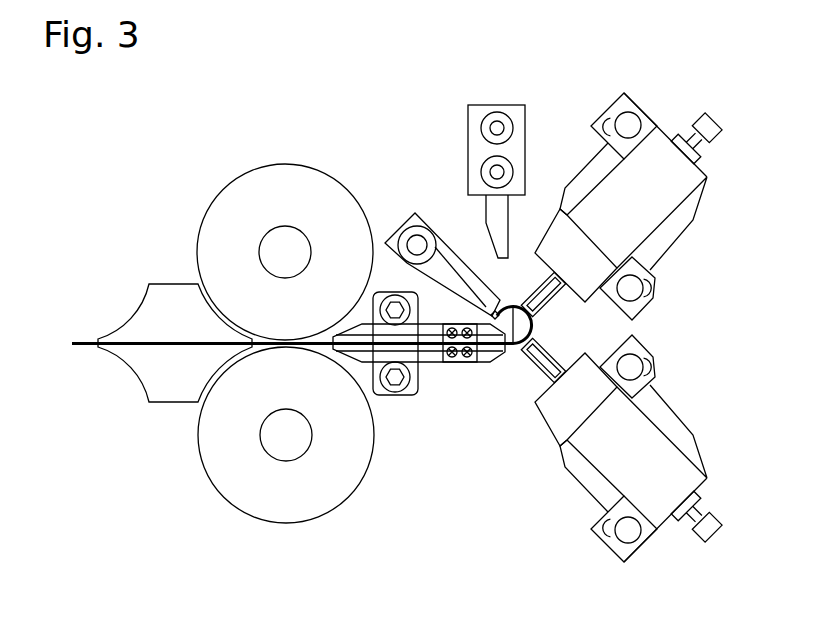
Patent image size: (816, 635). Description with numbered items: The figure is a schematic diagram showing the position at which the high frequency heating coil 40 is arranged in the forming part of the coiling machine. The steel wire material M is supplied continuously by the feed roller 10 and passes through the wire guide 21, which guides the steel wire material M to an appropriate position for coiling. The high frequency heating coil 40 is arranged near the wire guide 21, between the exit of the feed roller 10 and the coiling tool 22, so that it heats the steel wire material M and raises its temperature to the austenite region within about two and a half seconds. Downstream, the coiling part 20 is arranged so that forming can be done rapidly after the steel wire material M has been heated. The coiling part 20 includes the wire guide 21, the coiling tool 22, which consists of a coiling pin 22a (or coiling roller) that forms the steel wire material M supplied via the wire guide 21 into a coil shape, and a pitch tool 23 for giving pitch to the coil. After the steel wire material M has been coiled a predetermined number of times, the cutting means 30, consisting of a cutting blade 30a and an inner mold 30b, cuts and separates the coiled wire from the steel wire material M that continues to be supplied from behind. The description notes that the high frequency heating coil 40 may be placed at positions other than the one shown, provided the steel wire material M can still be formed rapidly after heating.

The feed roller 10 is at (285, 525).
The coiling part 20 is at (518, 546).
The wire guide 21 is at (497, 365).
The coiling tool 22 is at (708, 170).
The coiling pin 22a is at (523, 292).
The pitch tool 23 is at (422, 218).
The cutting means 30 is at (468, 135).
The cutting blade 30a is at (486, 218).
The inner mold 30b is at (504, 303).
The high frequency heating coil 40 is at (455, 366).
The steel wire material M is at (537, 320).